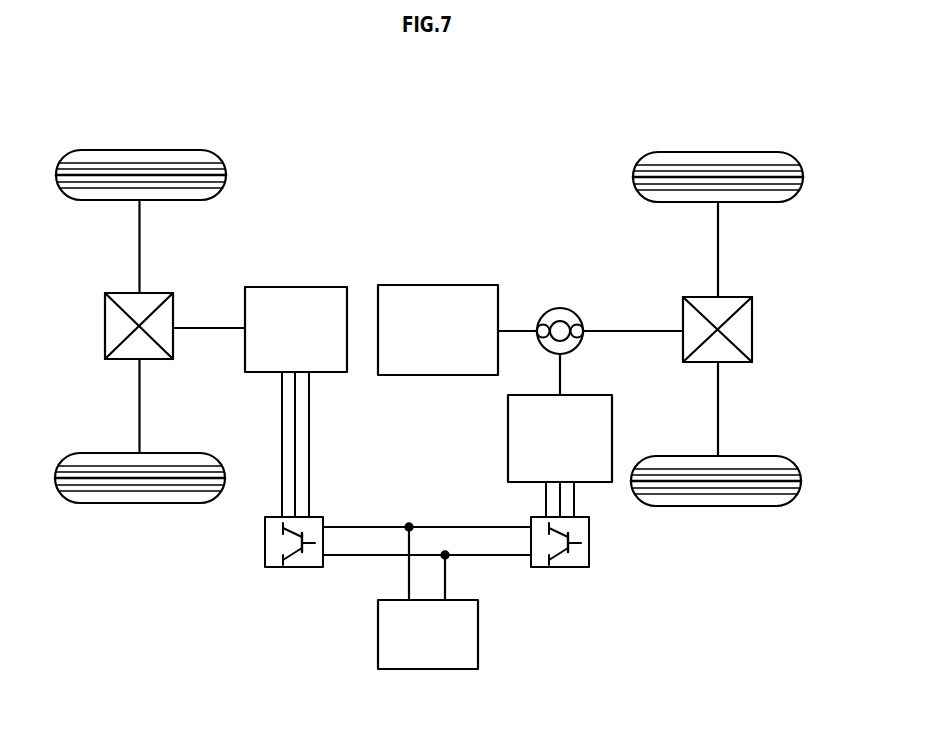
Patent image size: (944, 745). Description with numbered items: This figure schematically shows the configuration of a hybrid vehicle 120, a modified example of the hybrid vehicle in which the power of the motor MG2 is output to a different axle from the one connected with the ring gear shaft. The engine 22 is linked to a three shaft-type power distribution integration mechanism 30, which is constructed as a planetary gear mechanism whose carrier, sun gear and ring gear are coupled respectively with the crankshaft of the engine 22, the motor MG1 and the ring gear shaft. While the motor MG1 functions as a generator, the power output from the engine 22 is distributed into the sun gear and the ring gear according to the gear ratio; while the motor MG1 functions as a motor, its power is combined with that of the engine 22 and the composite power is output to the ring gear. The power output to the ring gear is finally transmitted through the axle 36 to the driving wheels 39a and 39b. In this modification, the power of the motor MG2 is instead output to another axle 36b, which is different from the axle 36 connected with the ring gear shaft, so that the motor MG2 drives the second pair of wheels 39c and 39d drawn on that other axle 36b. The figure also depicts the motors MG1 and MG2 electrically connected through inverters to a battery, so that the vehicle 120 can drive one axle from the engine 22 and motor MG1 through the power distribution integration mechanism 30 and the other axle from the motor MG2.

The hybrid vehicle 120 is at (460, 140).
The engine 22 is at (438, 285).
The power distribution integration mechanism 30 is at (560, 308).
The motor MG1 is at (508, 438).
The motor MG2 is at (296, 287).
The axle 36 is at (718, 243).
The axle 36b is at (140, 229).
The driving wheel 39a is at (720, 152).
The driving wheel 39b is at (718, 507).
The drive wheel 39c is at (140, 150).
The drive wheel 39d is at (139, 503).